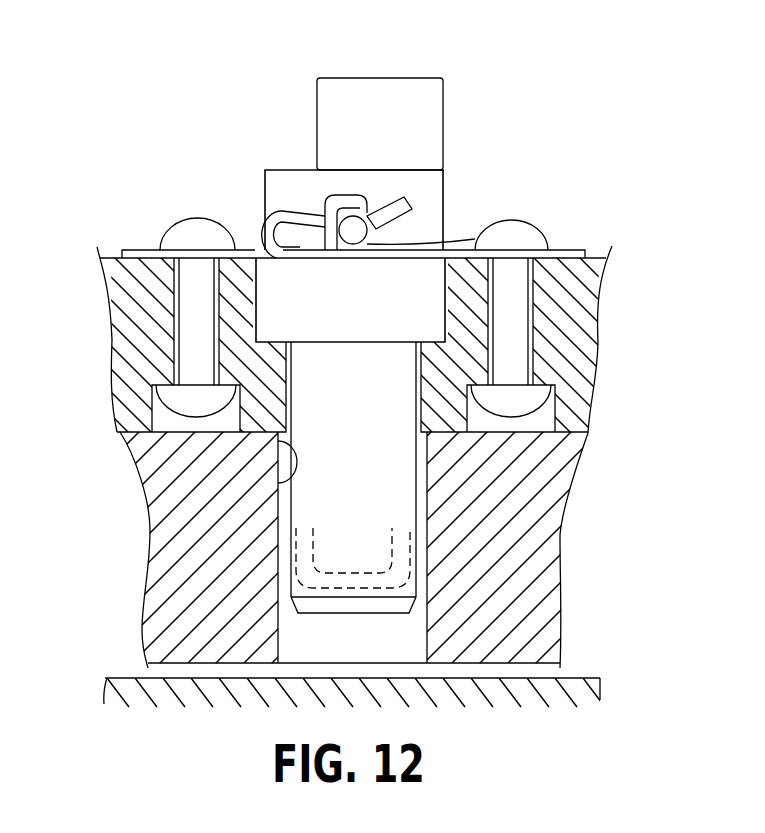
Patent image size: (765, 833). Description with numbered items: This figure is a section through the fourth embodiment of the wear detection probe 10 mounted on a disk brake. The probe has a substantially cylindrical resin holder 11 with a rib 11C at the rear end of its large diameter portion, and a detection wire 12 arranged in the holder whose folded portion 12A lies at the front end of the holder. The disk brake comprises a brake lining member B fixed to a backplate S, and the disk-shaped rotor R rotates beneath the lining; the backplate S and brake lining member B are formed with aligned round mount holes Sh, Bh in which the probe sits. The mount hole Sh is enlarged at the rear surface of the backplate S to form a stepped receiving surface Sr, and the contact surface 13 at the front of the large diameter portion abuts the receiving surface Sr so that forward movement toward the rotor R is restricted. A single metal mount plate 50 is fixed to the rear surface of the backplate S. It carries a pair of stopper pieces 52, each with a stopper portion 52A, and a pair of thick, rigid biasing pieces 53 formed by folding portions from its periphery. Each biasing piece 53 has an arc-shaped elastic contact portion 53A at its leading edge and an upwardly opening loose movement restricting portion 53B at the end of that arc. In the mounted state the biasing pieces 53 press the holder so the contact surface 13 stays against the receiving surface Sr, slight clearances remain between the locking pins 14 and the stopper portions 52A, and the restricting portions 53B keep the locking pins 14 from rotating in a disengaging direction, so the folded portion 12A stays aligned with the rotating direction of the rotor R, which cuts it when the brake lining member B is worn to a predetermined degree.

The wear detection probe 10 is at (486, 137).
The holder 11 is at (433, 217).
The rib 11C is at (335, 102).
The detection wire 12 is at (410, 546).
The folded portion 12A is at (413, 605).
The contact surface 13 is at (286, 362).
The locking pins 14 is at (367, 238).
The mount plate 50 is at (585, 251).
The stopper pieces 52 is at (322, 210).
The stopper portion 52A is at (362, 197).
The biasing pieces 53 is at (257, 220).
The elastic contact portion 53A is at (377, 216).
The loose movement restricting portion 53B is at (369, 226).
The backplate S is at (578, 334).
The mount hole Sh is at (262, 308).
The receiving surface Sr is at (437, 341).
The brake lining member B is at (510, 500).
The mount hole Bh is at (278, 470).
The rotor R is at (558, 680).